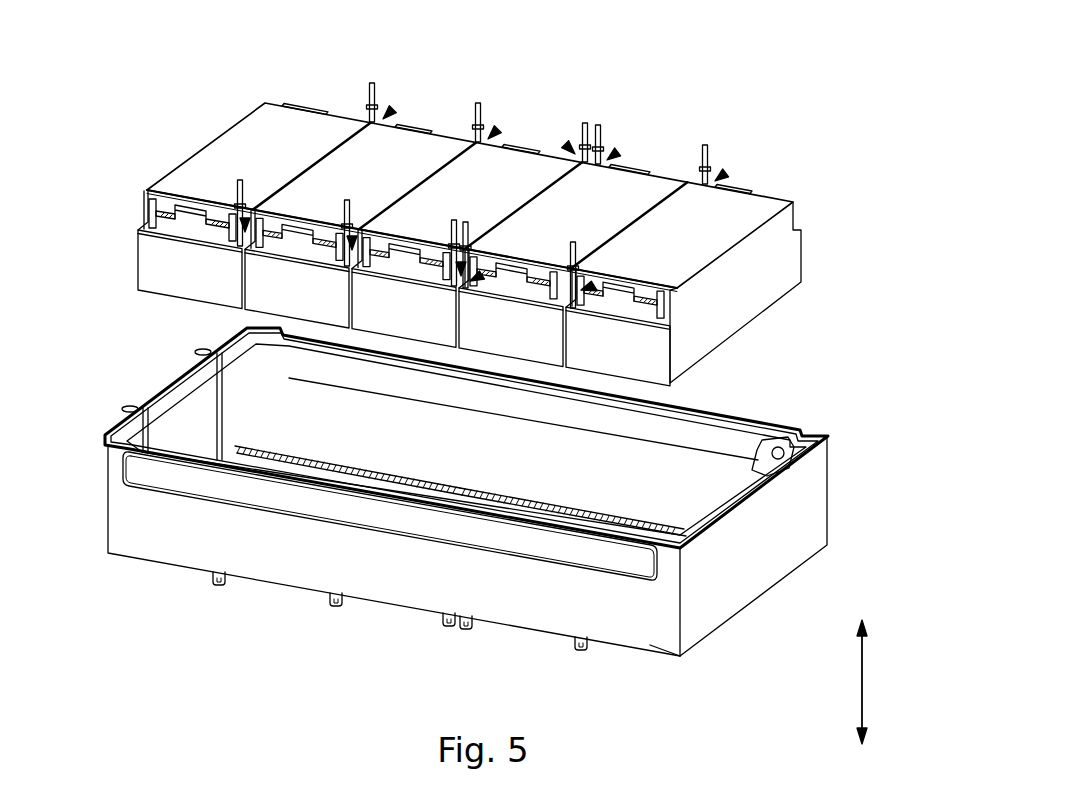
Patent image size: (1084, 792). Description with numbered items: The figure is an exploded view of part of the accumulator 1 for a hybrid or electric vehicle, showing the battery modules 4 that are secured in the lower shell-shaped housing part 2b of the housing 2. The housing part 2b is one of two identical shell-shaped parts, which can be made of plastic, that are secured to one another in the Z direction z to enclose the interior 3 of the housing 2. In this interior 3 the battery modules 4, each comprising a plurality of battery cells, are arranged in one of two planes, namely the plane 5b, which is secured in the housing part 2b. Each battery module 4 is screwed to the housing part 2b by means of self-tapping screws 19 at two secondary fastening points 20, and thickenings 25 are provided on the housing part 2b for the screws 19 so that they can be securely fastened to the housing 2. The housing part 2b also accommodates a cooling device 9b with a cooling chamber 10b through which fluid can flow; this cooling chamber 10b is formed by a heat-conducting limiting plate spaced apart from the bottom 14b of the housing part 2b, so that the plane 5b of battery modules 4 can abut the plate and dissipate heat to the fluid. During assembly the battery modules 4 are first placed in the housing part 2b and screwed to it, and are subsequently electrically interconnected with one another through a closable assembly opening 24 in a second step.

The accumulator 1 is at (504, 378).
The housing 2 is at (504, 528).
The housing part 2b is at (504, 528).
The interior 3 is at (592, 479).
The battery module 4 is at (616, 352).
The plane 5b is at (523, 207).
The cooling device 9b is at (246, 457).
The cooling chamber 10b is at (683, 535).
The bottom 14b is at (662, 663).
The self-tapping screw 19 is at (452, 168).
The secondary fastening point 20 is at (508, 172).
The closable assembly opening 24 is at (150, 467).
The thickening 25 is at (402, 647).
The Z direction z is at (864, 668).